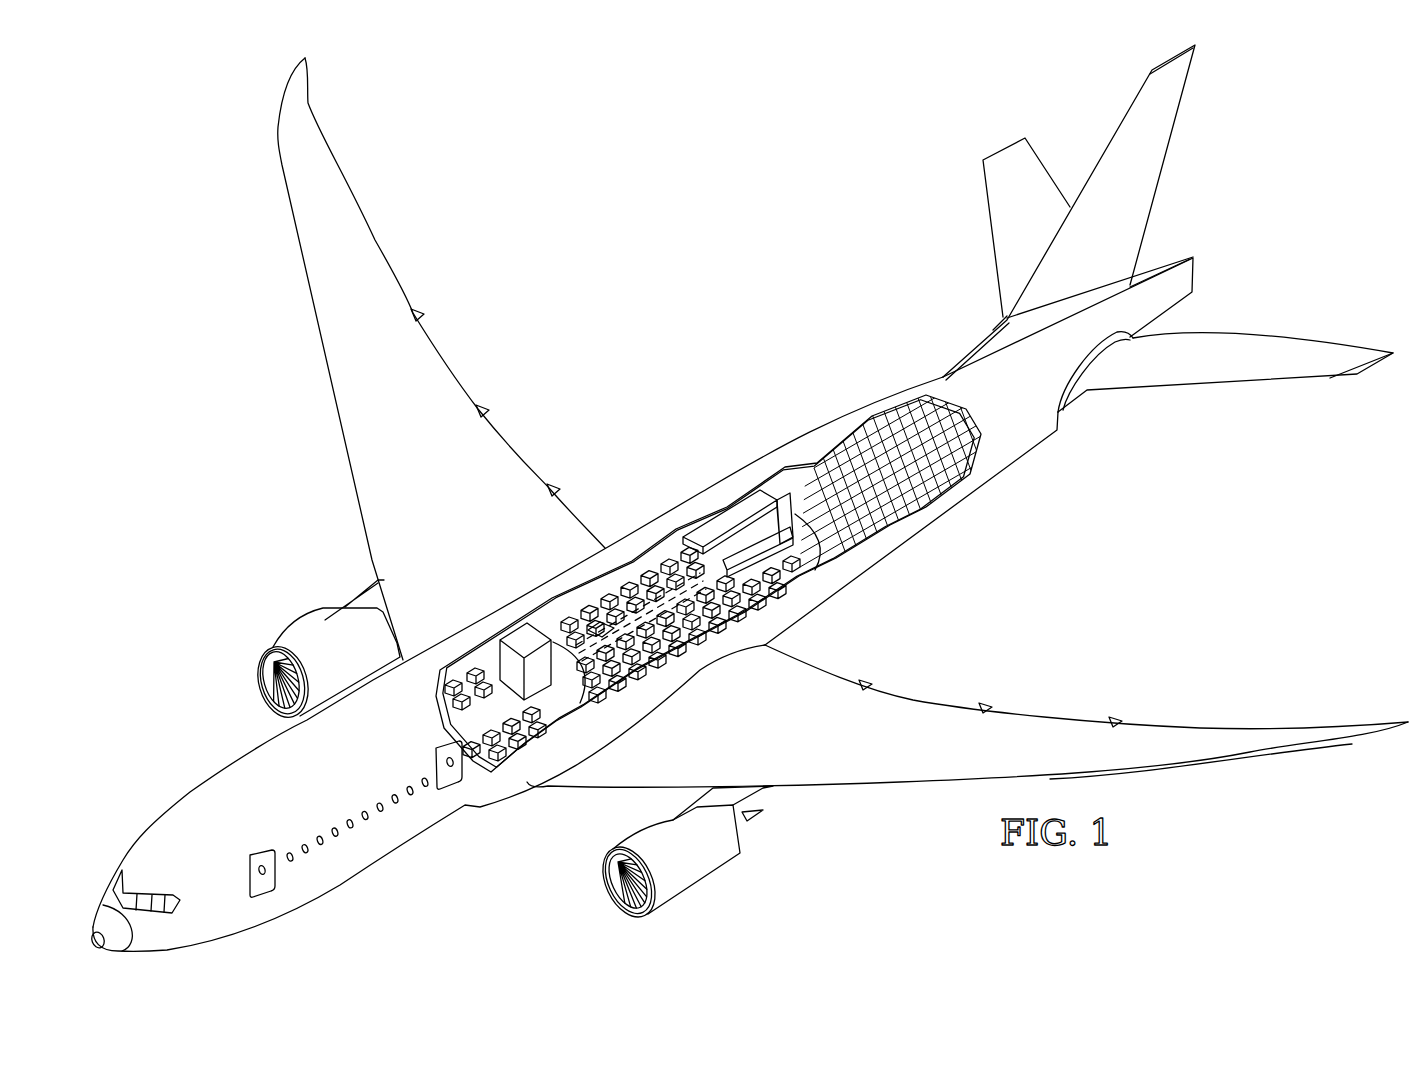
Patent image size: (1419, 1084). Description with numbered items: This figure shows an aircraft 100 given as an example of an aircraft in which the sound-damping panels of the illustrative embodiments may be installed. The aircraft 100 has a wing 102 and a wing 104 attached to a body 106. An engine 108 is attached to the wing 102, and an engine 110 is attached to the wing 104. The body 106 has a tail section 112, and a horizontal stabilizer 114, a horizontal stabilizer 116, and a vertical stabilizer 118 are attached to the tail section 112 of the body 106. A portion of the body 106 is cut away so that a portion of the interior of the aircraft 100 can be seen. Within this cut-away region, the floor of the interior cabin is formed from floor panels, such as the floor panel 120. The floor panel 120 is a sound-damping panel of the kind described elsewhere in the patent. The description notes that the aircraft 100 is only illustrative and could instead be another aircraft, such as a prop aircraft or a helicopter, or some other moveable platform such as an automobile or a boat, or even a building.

The aircraft 100 is at (621, 339).
The wing 102 is at (316, 311).
The wing 104 is at (884, 784).
The body 106 is at (185, 797).
The engine 108 is at (306, 616).
The engine 110 is at (707, 887).
The tail section 112 is at (1158, 424).
The horizontal stabilizer 114 is at (993, 240).
The horizontal stabilizer 116 is at (1300, 343).
The vertical stabilizer 118 is at (1162, 166).
The floor panel 120 is at (600, 625).